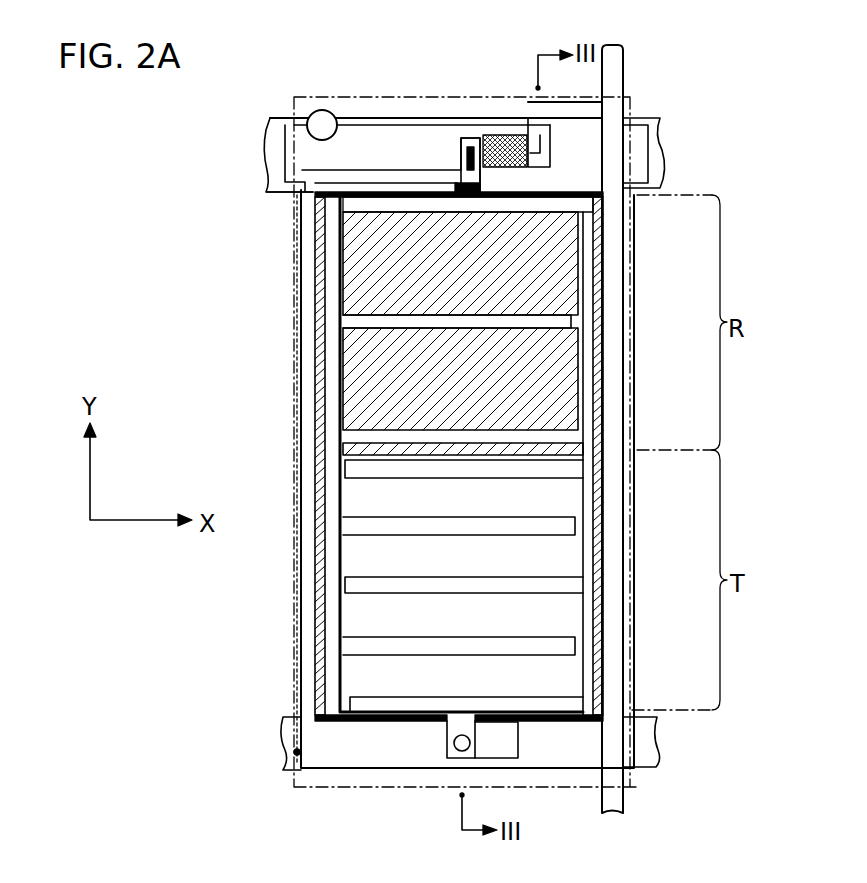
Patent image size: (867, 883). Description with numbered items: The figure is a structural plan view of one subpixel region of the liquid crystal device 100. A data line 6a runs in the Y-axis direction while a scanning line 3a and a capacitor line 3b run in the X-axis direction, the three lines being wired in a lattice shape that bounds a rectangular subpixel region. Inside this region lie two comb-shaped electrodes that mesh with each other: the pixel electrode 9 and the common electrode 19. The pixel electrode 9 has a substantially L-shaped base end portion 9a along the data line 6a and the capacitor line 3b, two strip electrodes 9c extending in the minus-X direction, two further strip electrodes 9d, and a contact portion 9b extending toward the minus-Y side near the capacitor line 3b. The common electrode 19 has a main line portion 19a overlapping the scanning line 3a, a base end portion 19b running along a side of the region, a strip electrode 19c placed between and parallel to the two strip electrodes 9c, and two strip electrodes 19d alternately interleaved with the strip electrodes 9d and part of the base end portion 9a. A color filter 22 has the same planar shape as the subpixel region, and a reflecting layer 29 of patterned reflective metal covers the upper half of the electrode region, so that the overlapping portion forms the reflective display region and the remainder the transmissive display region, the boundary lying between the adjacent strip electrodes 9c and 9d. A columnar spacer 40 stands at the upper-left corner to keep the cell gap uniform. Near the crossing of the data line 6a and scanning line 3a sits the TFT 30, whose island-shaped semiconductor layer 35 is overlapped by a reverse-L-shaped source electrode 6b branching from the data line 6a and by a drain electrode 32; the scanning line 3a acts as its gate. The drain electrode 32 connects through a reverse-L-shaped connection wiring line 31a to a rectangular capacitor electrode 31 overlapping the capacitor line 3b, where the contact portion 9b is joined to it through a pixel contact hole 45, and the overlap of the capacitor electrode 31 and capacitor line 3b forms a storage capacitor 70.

The liquid crystal device 100 is at (692, 66).
The scanning line 3a is at (285, 137).
The capacitor line 3b is at (290, 717).
The data line 6a is at (622, 803).
The source electrode 6b is at (568, 107).
The pixel electrode 9 is at (600, 360).
The base end portion 9a is at (588, 562).
The contact portion 9b is at (445, 730).
The strip electrodes 9c is at (348, 440).
The strip electrodes 9d is at (348, 472).
The common electrode 19 is at (350, 108).
The main line portion 19a is at (280, 192).
The base end portion 19b is at (332, 285).
The strip electrode 19c is at (577, 322).
The strip electrodes 19d is at (562, 522).
The color filter 22 is at (290, 217).
The reflecting layer 29 is at (568, 392).
The TFT 30 is at (495, 122).
The capacitor electrode 31 is at (360, 758).
The connection wiring line 31a is at (417, 180).
The drain electrode 32 is at (468, 135).
The semiconductor layer 35 is at (512, 137).
The columnar spacer 40 is at (322, 110).
The pixel contact hole 45 is at (470, 748).
The storage capacitor 70 is at (297, 752).